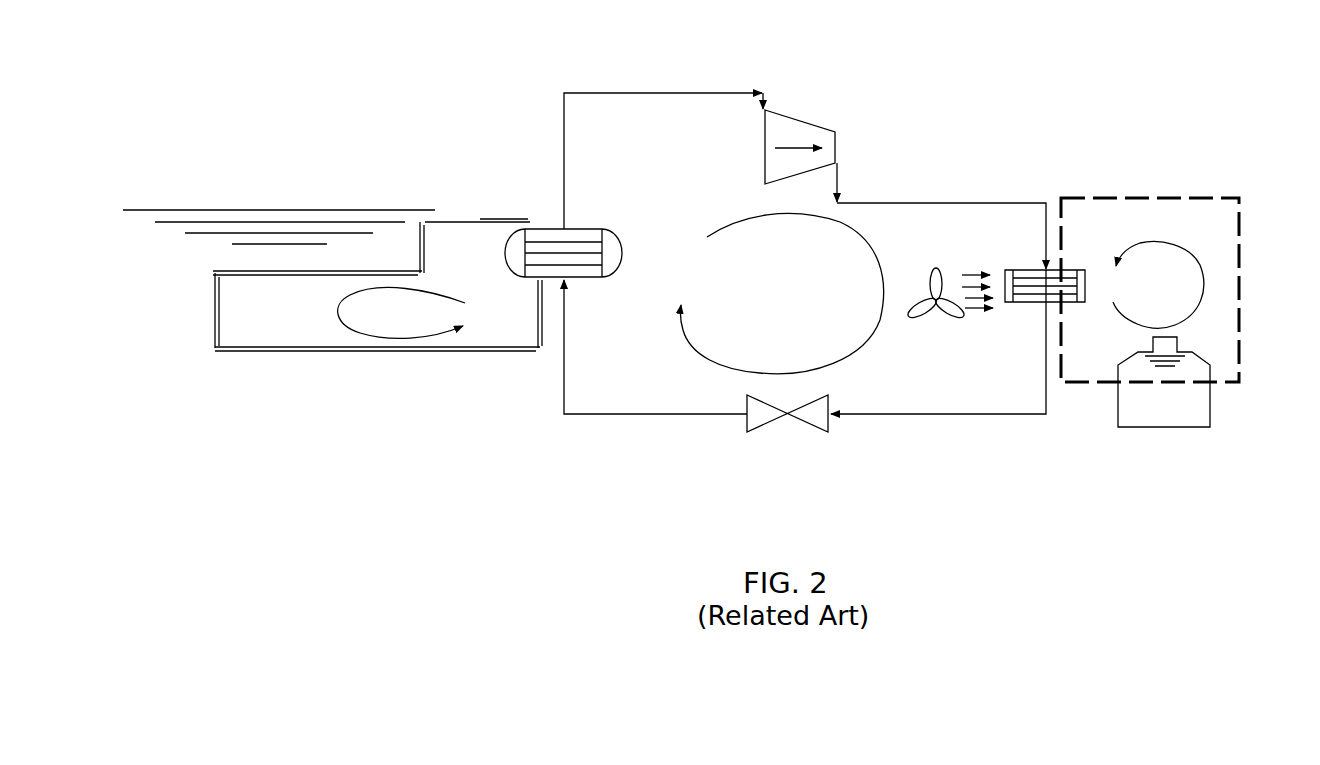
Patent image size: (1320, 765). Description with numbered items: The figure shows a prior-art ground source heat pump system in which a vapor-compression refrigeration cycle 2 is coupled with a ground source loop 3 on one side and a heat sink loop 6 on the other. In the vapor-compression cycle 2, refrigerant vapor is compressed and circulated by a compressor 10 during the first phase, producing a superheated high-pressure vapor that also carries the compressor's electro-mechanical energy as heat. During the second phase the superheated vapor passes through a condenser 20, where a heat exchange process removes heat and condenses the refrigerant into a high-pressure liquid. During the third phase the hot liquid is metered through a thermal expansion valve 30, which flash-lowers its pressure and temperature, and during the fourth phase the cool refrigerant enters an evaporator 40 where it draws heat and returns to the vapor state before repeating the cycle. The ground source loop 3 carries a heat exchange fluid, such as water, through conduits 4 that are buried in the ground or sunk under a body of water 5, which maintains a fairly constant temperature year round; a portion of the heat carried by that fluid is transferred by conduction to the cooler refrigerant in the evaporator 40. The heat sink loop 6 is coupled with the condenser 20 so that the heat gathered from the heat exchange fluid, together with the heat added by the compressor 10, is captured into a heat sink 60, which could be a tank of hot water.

The vapor-compression refrigeration cycle 2 is at (923, 162).
The ground source loop 3 is at (441, 373).
The conduits 4 is at (291, 352).
The body of water 5 is at (326, 197).
The heat sink loop 6 is at (1149, 174).
The compressor 10 is at (829, 127).
The condenser 20 is at (1070, 267).
The thermal expansion valve 30 is at (832, 428).
The evaporator 40 is at (541, 227).
The heat sink 60 is at (1172, 429).